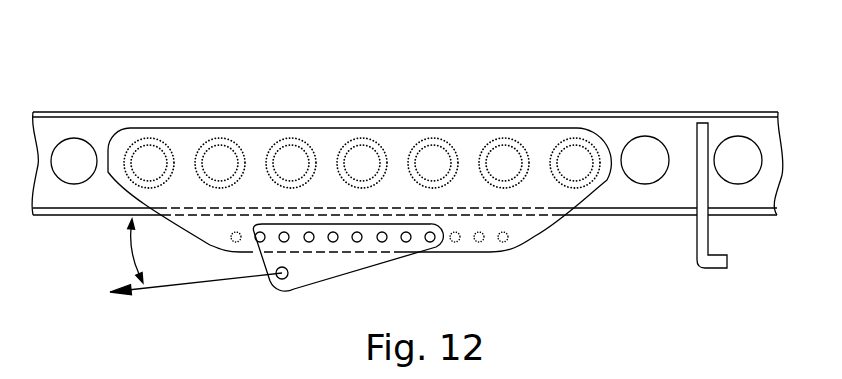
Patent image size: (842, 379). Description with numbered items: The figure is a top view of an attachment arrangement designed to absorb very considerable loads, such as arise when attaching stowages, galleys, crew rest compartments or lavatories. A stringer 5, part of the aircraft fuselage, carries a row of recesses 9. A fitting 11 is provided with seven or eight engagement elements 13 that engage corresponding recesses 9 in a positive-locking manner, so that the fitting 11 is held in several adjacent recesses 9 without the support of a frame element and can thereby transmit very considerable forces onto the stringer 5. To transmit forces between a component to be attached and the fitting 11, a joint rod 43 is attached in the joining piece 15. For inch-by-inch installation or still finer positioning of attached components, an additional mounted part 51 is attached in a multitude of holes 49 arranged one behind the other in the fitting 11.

The stringer 5 is at (622, 125).
The recesses 9 is at (645, 150).
The fitting 11 is at (467, 152).
The engagement elements 13 is at (292, 152).
The joining piece 15 is at (287, 278).
The joint rod 43 is at (190, 283).
The holes 49 is at (432, 244).
The additional mounted part 51 is at (333, 268).